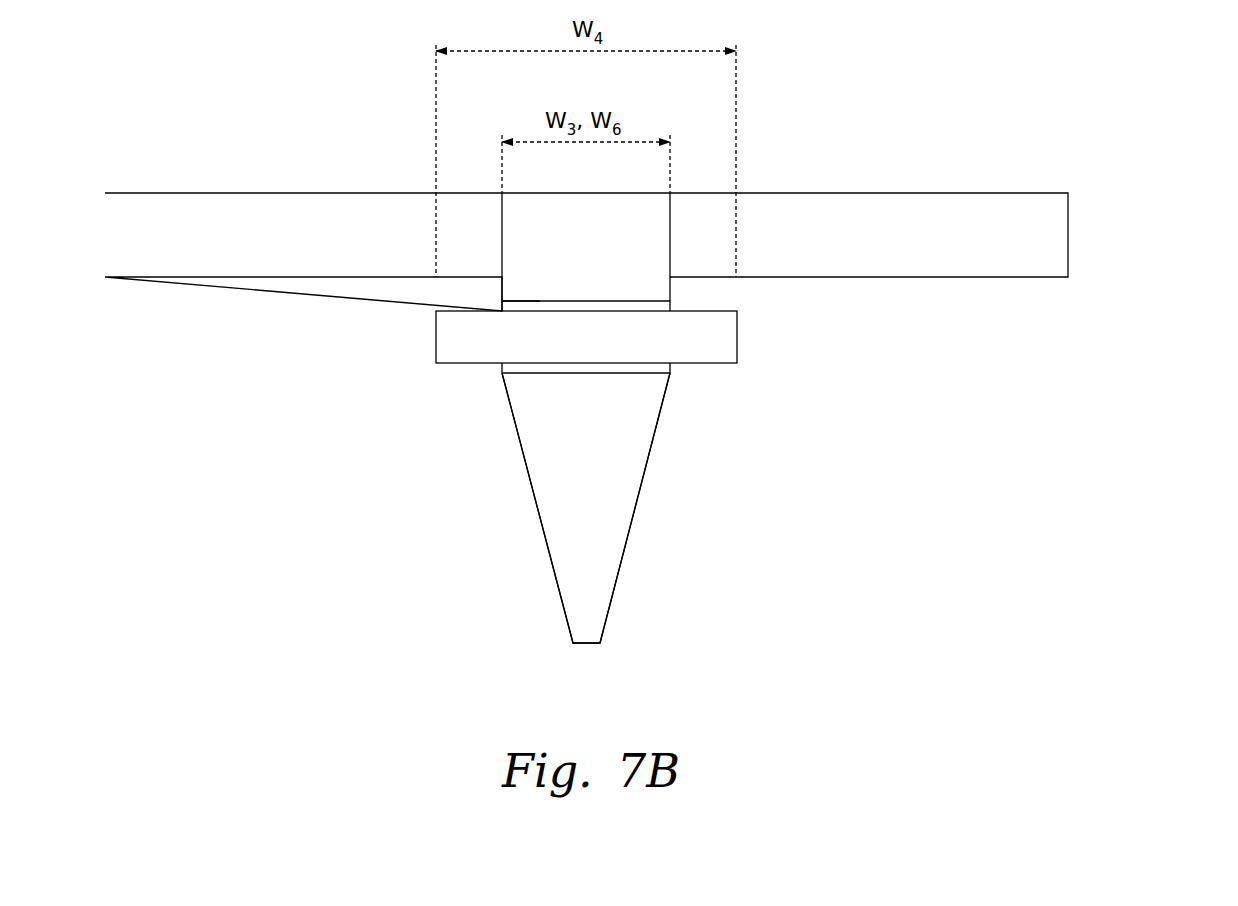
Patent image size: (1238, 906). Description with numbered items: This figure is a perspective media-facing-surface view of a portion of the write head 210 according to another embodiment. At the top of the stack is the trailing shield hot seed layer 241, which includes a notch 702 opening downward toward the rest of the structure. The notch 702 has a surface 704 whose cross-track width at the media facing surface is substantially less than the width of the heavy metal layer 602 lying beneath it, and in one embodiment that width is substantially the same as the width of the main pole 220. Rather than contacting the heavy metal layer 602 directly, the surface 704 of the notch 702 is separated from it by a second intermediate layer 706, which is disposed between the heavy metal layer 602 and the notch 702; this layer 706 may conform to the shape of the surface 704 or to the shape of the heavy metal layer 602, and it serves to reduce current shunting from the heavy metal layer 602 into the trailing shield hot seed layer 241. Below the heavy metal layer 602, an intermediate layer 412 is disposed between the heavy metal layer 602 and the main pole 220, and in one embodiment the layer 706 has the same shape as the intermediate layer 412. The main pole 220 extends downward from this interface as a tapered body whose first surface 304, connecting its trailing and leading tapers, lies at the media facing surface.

The write head 210 is at (1108, 95).
The trailing shield hot seed layer 241 is at (919, 249).
The notch 702 is at (502, 287).
The surface of the notch 704 is at (651, 300).
The second intermediate layer 706 is at (527, 305).
The heavy metal layer 602 is at (605, 348).
The intermediate layer 412 is at (598, 371).
The first surface 304 is at (606, 468).
The main pole 220 is at (593, 573).